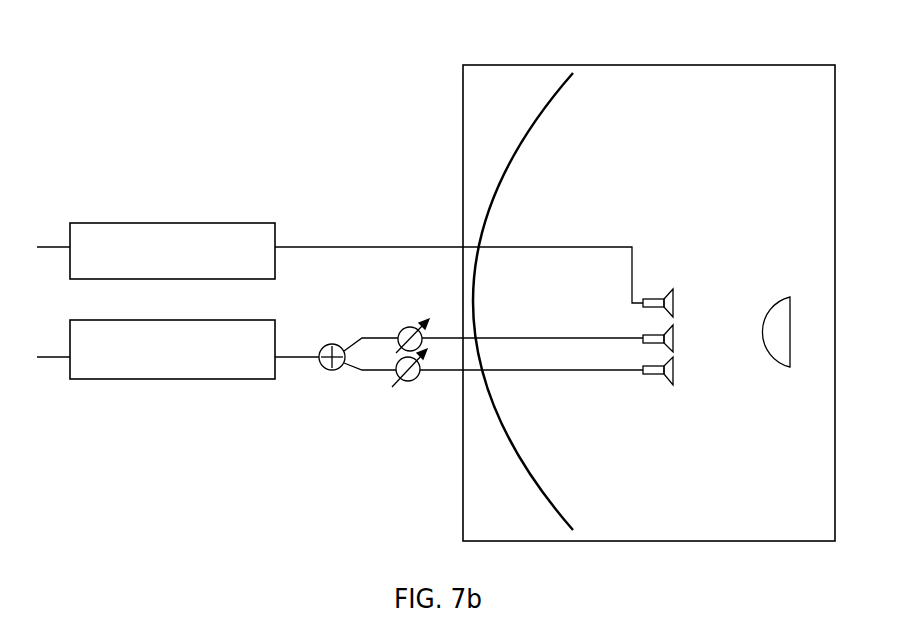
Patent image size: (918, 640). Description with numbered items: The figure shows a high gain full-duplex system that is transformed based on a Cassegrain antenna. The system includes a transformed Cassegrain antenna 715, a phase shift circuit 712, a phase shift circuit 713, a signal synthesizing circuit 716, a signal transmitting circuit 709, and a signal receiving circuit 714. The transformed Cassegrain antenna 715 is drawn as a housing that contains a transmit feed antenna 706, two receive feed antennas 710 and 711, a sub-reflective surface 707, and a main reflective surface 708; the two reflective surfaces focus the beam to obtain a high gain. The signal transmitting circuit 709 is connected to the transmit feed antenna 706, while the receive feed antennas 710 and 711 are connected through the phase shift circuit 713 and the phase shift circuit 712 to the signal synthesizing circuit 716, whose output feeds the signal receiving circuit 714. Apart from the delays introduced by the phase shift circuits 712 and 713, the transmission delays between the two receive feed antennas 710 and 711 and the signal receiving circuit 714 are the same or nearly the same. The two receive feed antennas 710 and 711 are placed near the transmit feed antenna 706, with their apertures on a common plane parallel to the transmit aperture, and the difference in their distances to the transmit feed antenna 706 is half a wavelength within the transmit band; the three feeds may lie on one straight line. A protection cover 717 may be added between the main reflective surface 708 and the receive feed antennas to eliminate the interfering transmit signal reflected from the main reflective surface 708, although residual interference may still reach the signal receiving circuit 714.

The transmit feed antenna 706 is at (679, 283).
The sub-reflective surface 707 is at (798, 308).
The main reflective surface 708 is at (539, 301).
The signal transmitting circuit 709 is at (340, 241).
The receive feed antenna 710 is at (676, 401).
The receive feed antenna 711 is at (680, 325).
The phase shift circuit 712 is at (519, 314).
The phase shift circuit 713 is at (517, 395).
The signal receiving circuit 714 is at (178, 374).
The transformed Cassegrain antenna 715 is at (649, 277).
The signal synthesizing circuit 716 is at (358, 341).
The protection cover 717 is at (627, 366).